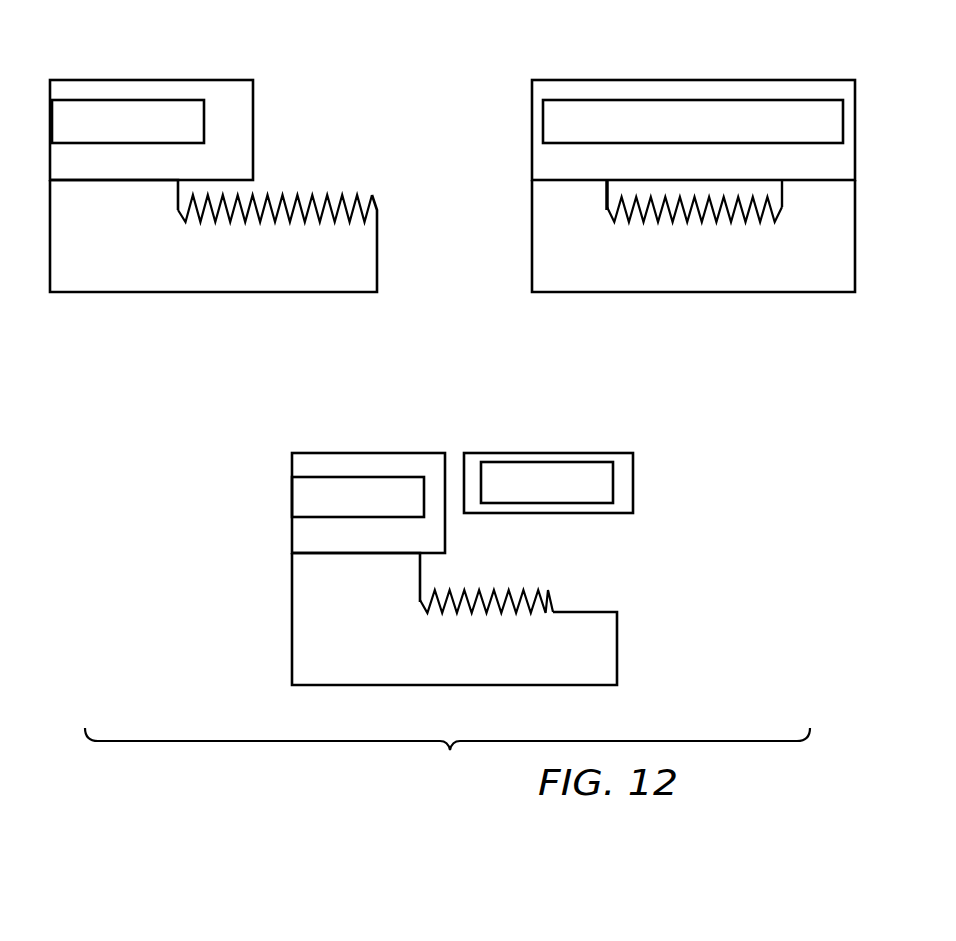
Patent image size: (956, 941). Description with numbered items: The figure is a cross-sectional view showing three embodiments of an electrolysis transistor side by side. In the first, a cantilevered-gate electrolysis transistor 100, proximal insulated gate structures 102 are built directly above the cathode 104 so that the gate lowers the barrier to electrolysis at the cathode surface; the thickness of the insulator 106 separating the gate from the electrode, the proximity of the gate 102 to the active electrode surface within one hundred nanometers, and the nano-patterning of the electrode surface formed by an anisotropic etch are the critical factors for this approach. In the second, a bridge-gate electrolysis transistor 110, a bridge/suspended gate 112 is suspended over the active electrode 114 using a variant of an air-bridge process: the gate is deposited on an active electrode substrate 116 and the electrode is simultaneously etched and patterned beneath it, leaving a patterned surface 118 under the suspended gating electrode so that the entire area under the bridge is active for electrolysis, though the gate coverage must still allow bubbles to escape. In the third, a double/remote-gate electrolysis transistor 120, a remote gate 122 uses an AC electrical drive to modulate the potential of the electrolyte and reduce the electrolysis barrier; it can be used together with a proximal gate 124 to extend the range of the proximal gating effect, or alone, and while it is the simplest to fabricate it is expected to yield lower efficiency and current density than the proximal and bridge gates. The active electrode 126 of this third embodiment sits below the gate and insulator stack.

The electrolysis transistor 100 is at (247, 166).
The proximal insulated gate structure 102 is at (145, 100).
The cathode 104 is at (357, 272).
The insulator 106 is at (238, 162).
The electrolysis transistor 110 is at (654, 166).
The bridge/suspended gate 112 is at (698, 100).
The active electrode 114 is at (550, 262).
The active electrode substrate 116 is at (542, 170).
The patterned surface 118 is at (605, 203).
The electrolysis transistor 120 is at (491, 552).
The remote gate 122 is at (508, 462).
The proximal gate 124 is at (373, 477).
The active electrode 126 is at (600, 652).